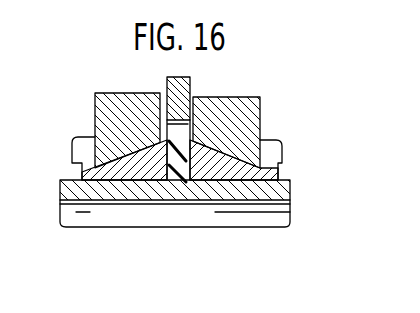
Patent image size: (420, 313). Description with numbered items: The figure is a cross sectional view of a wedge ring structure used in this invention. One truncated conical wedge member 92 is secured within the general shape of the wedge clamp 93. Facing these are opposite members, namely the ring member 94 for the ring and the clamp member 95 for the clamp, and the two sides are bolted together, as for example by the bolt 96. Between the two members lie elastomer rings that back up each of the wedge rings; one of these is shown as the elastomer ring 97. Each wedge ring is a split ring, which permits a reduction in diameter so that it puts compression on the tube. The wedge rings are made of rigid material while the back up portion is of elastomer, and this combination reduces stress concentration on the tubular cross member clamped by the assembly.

The truncated conical wedge member 92 is at (137, 172).
The wedge clamp 93 is at (100, 108).
The opposite ring member 94 is at (232, 172).
The opposite clamp member 95 is at (261, 115).
The bolt 96 is at (282, 143).
The elastomer ring 97 is at (195, 150).